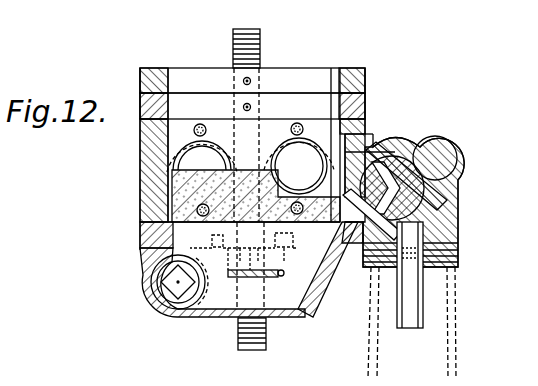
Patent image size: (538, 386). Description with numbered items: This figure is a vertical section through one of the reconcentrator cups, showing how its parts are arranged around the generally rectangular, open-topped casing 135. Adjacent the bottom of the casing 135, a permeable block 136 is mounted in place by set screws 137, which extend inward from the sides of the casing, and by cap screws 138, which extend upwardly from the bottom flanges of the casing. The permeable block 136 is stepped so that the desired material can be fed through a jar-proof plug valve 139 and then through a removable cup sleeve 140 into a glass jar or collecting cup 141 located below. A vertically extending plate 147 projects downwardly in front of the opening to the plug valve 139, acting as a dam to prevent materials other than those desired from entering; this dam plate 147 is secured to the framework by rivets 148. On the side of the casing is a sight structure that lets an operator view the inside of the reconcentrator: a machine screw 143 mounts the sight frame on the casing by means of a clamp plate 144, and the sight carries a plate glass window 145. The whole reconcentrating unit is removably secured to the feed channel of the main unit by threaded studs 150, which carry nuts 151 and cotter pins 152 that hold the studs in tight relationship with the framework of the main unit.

The casing 135 is at (150, 235).
The permeable block 136 is at (241, 180).
The set screw 137 is at (175, 183).
The cap screw 138 is at (212, 234).
The plug valve 139 is at (410, 184).
The removable cup sleeve 140 is at (423, 291).
The collecting cup 141 is at (455, 346).
The machine screw 143 is at (198, 124).
The clamp plate 144 is at (174, 138).
The plate glass window 145 is at (193, 156).
The vertically extending plate 147 is at (350, 150).
The rivet 148 is at (366, 127).
The threaded stud 150 is at (233, 46).
The nut 151 is at (268, 262).
The cotter pin 152 is at (262, 283).